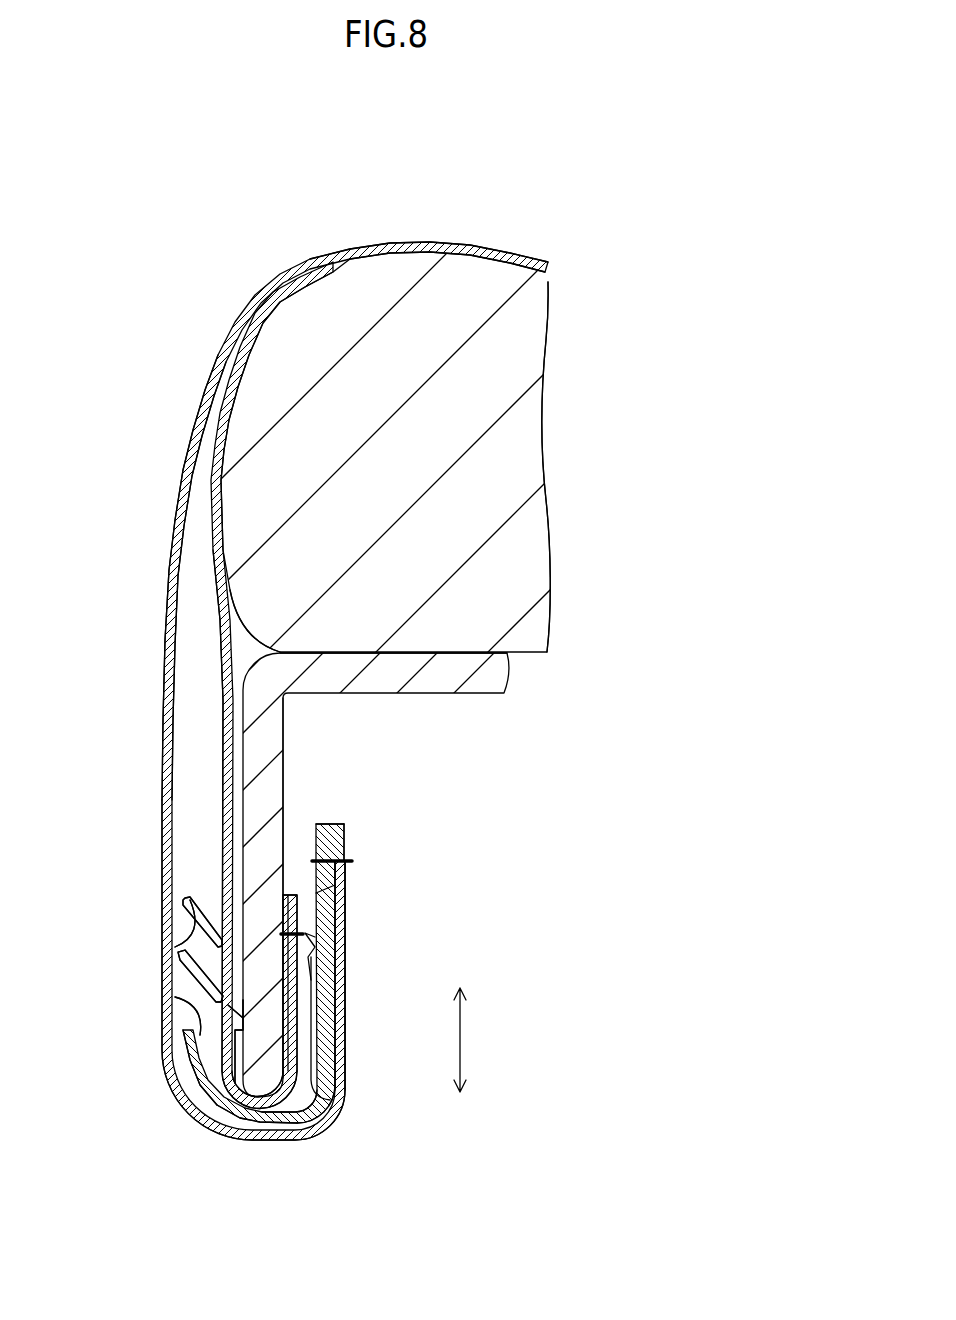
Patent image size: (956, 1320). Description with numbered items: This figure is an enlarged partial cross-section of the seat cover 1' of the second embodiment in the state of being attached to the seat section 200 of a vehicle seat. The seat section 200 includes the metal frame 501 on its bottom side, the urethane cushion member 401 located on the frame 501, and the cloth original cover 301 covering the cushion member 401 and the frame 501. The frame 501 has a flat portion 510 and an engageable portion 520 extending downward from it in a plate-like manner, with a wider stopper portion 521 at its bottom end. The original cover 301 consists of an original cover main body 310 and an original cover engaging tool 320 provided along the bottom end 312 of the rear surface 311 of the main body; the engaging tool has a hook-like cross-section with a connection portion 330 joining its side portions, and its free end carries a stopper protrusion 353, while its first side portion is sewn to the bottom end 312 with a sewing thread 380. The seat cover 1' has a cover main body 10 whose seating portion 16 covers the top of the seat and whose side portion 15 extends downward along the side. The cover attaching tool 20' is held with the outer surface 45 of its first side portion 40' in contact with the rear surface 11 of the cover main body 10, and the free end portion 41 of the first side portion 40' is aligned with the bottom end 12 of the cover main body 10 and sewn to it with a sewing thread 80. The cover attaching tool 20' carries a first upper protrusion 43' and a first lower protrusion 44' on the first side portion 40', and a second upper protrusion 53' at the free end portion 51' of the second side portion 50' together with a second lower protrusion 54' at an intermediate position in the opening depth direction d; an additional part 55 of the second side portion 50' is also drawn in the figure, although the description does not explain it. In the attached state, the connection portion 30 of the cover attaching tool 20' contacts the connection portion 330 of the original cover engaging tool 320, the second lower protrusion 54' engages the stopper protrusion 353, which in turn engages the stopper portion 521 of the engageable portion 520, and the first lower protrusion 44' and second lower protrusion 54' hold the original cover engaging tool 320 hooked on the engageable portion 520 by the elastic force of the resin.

The seat cover 1' is at (203, 847).
The cover main body 10 is at (149, 709).
The rear surface 11 is at (175, 680).
The left side portion 15 is at (165, 668).
The seating portion 16 is at (473, 243).
The seat section 200 is at (614, 427).
The cushion member 401 is at (516, 357).
The rear surface 311 is at (240, 653).
The original cover 301 is at (223, 780).
The original cover main body 310 is at (223, 823).
The original cover engaging tool 320 is at (285, 1063).
The sewing thread 380 is at (313, 910).
The frame 501 is at (367, 693).
The flat portion 510 is at (403, 693).
The engageable portion 520 is at (283, 798).
The stopper portion 521 is at (333, 1103).
The cover attaching tool 20' is at (332, 823).
The free end portion 41 is at (320, 822).
The sewing thread 80 is at (330, 846).
The bottom end 12 is at (352, 861).
The bottom end 312 is at (323, 892).
The first upper protrusion 43' is at (339, 938).
The outer surface 45 is at (340, 963).
The first lower protrusion 44' is at (351, 973).
The first side portion 40' is at (293, 992).
The connection portion 330 is at (300, 1120).
The connection portion 30 is at (263, 1122).
The stopper protrusion 353 is at (213, 1087).
The second side portion 50' is at (166, 990).
The free end portion 51' is at (168, 915).
The second upper protrusion 53' is at (168, 967).
The clip spring portion 55 is at (173, 997).
The second lower protrusion 54' is at (182, 1041).
The opening depth direction d is at (469, 1040).